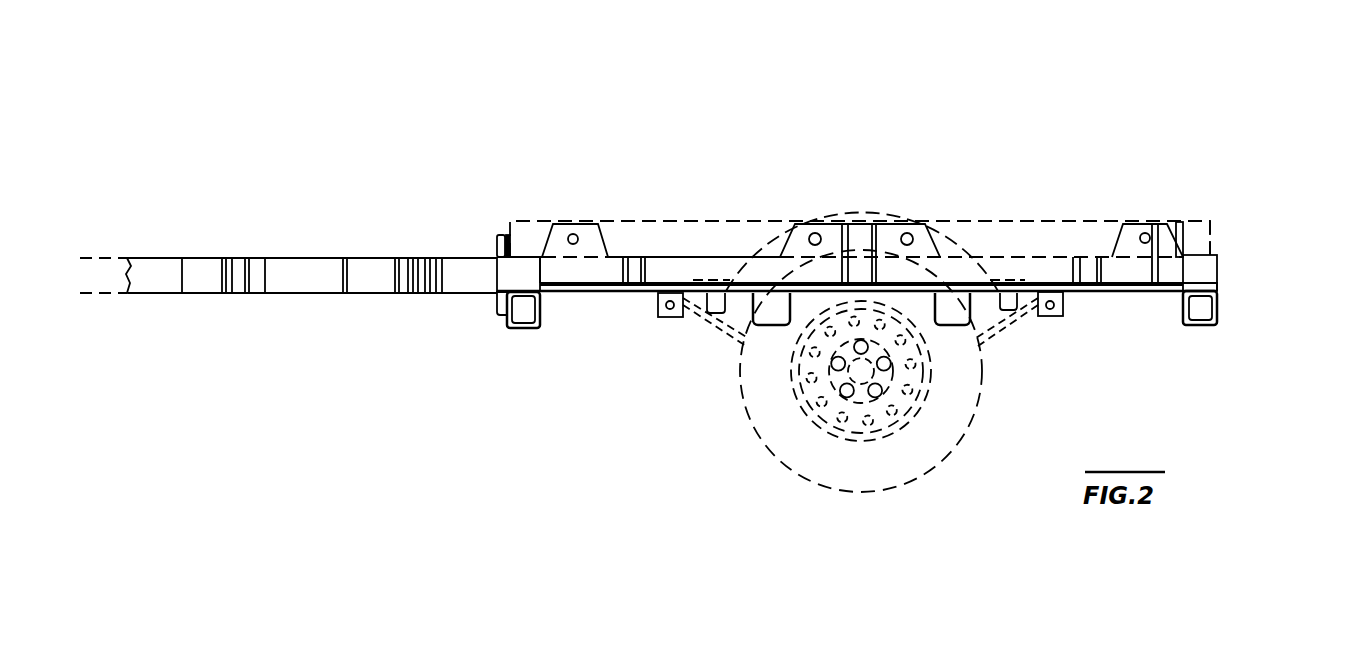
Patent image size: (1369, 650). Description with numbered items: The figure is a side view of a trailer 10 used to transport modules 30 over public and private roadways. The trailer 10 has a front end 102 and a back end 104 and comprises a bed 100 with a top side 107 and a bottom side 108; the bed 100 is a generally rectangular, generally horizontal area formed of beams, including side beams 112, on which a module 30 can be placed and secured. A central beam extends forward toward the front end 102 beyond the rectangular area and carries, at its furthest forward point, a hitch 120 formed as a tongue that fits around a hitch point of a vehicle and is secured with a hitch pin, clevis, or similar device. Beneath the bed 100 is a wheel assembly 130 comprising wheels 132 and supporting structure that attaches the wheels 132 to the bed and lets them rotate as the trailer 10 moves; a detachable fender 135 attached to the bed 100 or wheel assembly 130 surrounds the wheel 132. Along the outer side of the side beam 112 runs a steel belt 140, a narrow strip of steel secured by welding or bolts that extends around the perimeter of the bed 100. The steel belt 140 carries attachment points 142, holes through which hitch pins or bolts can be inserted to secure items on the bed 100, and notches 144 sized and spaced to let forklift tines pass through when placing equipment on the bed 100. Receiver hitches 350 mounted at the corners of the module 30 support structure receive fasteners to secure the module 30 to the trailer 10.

The trailer 10 is at (668, 102).
The module 30 is at (703, 215).
The bed 100 is at (1082, 255).
The front end 102 is at (463, 258).
The back end 104 is at (1217, 285).
The top side 107 is at (1210, 257).
The bottom side 108 is at (550, 293).
The side beam 112 is at (1203, 270).
The hitch 120 is at (160, 262).
The wheel assembly 130 is at (640, 425).
The wheel 132 is at (670, 397).
The fender 135 is at (690, 368).
The steel belt 140 is at (499, 243).
The attachment point 142 is at (573, 234).
The notch 144 is at (742, 214).
The receiver hitch 350 is at (498, 352).